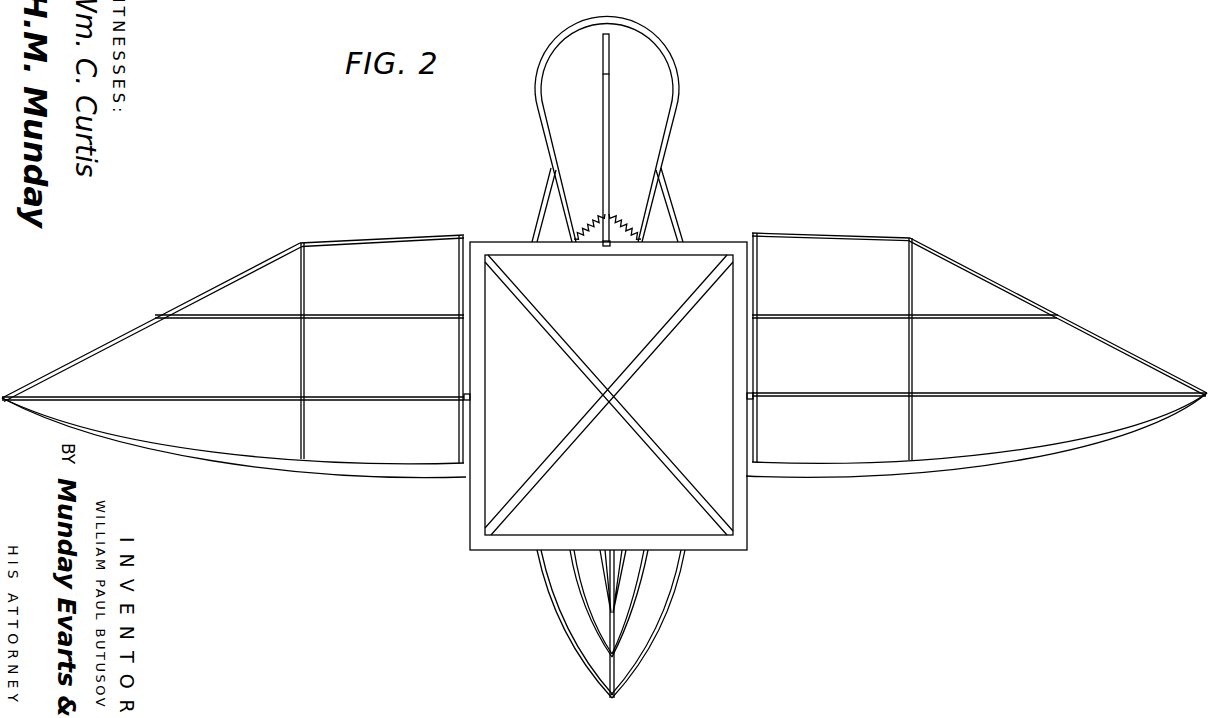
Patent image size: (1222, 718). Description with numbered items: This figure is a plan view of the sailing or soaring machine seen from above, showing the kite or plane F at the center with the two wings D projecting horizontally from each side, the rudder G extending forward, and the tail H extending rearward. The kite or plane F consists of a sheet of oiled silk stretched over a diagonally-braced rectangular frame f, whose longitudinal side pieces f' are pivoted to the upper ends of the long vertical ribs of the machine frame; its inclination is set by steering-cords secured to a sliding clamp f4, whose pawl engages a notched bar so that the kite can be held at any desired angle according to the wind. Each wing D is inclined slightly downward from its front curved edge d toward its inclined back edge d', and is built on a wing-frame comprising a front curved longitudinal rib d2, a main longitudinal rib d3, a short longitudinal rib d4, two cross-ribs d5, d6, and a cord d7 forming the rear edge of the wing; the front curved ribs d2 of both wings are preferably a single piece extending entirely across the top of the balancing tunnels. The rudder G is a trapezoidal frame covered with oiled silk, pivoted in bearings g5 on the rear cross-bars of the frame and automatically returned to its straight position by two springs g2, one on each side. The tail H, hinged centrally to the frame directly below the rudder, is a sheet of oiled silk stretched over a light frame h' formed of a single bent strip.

The tail frame h' is at (608, 129).
The tail H is at (607, 133).
The rudder G is at (611, 106).
The springs g2 is at (607, 216).
The bearings g5 is at (606, 245).
The kite or plane F is at (610, 335).
The diagonally-braced rectangular frame f is at (609, 395).
The longitudinal side pieces f' is at (608, 395).
The sliding clamp f4 is at (467, 398).
The wings D is at (337, 366).
The front curved edge d is at (604, 450).
The front curved longitudinal rib d2 is at (376, 455).
The main longitudinal rib d3 is at (382, 397).
The short longitudinal rib d4 is at (404, 306).
The cross-rib d5 is at (300, 348).
The cross-rib d6 is at (459, 345).
The cord d7 is at (140, 333).
The inclined back edge d' is at (608, 274).